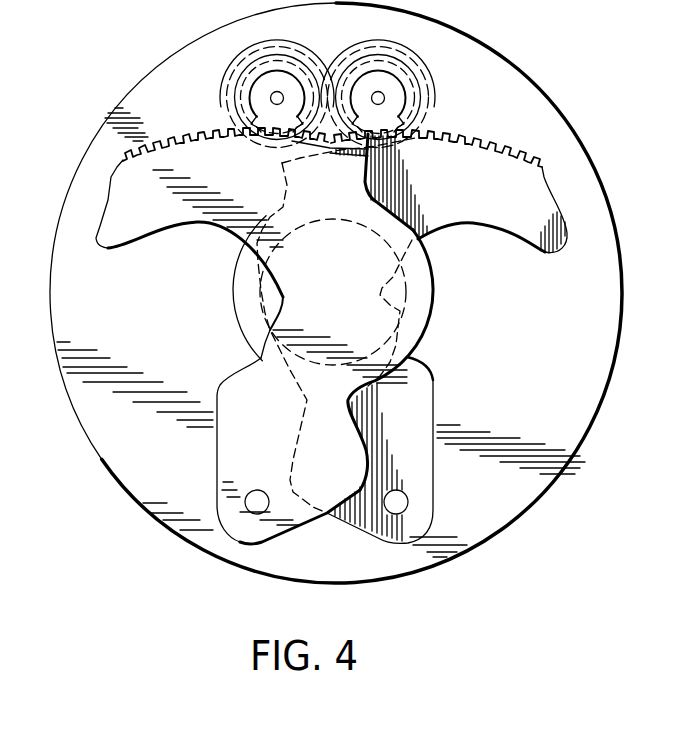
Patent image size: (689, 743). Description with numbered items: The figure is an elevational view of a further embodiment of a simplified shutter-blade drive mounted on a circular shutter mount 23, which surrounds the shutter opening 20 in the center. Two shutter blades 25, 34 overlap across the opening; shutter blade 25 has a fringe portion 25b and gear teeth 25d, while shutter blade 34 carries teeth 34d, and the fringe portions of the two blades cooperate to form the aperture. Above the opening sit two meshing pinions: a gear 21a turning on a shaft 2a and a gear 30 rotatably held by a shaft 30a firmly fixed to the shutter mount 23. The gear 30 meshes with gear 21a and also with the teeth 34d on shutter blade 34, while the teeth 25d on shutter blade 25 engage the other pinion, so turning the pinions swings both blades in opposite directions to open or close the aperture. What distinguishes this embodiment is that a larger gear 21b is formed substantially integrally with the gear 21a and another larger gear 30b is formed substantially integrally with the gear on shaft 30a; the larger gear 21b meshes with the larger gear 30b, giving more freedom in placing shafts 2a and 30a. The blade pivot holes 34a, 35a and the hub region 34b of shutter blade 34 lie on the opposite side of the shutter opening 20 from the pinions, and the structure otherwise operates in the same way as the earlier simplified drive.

The shaft 2a is at (276, 106).
The shutter opening 20 is at (260, 282).
The gear 21a is at (257, 78).
The larger gear 21b is at (270, 50).
The shutter mount 23 is at (112, 455).
The shutter blade 25 is at (112, 208).
The fringe portion 25b is at (264, 343).
The gear teeth 25d is at (143, 146).
The gear 30 is at (367, 68).
The shaft 30a is at (380, 106).
The larger gear 30b is at (432, 77).
The shutter blade 34 is at (543, 205).
The second plate arm pin hole 34a is at (397, 500).
The second plate hub portion 34b is at (402, 298).
The teeth 34d is at (503, 150).
The first plate arm pin hole 35a is at (259, 500).